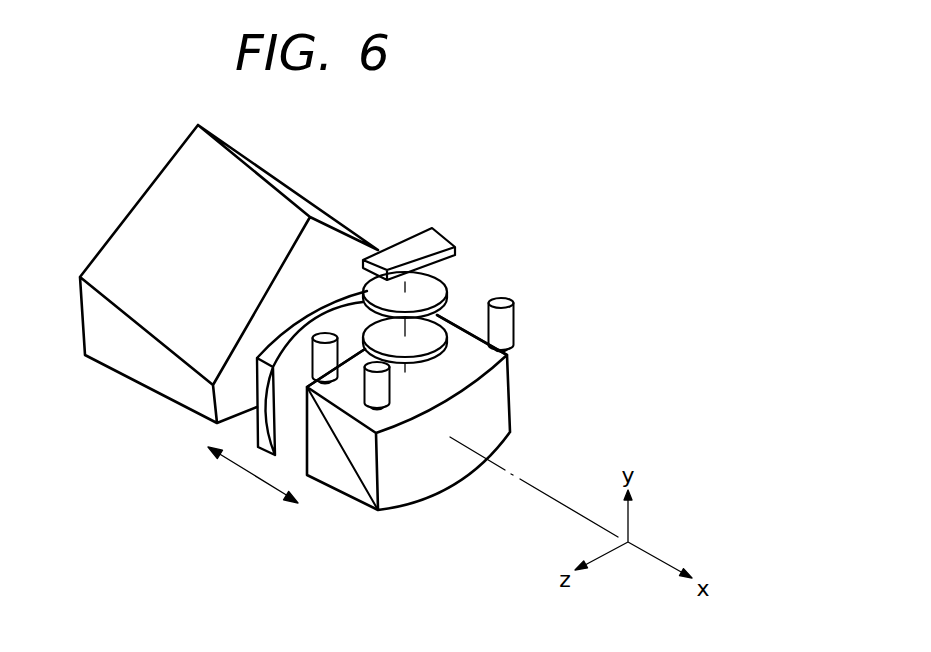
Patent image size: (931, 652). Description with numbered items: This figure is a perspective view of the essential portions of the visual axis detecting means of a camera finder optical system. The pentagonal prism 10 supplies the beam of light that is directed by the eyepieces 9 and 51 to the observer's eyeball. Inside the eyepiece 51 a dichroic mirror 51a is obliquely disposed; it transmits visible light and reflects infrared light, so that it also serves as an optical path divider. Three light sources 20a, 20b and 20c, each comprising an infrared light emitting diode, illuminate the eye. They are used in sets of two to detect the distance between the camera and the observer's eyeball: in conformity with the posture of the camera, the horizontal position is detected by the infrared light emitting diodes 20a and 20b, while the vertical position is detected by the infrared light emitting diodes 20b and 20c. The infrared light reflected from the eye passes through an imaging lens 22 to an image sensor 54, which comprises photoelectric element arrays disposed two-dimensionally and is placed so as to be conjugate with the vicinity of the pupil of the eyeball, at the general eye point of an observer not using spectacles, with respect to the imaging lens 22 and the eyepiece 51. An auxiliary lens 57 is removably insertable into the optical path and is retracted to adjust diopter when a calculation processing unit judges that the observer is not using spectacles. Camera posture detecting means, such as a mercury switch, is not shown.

The eyepiece 9 is at (287, 415).
The pentagonal prism 10 is at (278, 158).
The light source 20a is at (515, 313).
The light source 20b is at (397, 407).
The light source 20c is at (327, 337).
The imaging lens 22 is at (507, 364).
The eyepiece 51 is at (517, 415).
The dichroic mirror 51a is at (357, 487).
The image sensor 54 is at (430, 227).
The auxiliary lens 57 is at (440, 297).